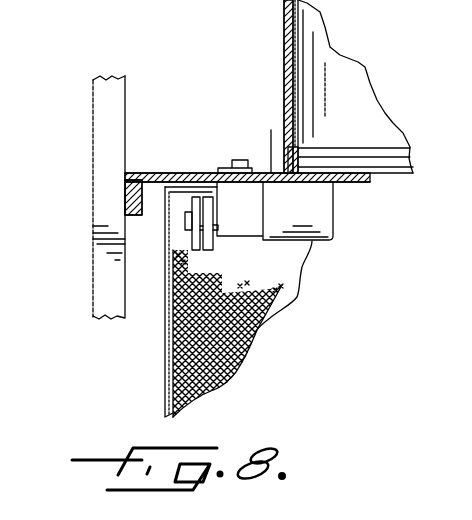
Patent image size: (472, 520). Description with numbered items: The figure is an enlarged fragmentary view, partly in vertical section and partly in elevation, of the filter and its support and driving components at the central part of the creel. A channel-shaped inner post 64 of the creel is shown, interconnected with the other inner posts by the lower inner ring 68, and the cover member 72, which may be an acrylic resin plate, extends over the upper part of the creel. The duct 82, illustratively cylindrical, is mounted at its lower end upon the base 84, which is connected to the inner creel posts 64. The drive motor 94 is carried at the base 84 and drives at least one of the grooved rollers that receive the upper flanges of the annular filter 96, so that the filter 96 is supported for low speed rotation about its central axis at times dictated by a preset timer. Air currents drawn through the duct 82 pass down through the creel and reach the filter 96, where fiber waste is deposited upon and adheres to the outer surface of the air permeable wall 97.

The inner post 64 is at (93, 240).
The lower inner ring 68 is at (125, 200).
The cover member 72 is at (193, 203).
The duct 82 is at (338, 58).
The base 84 is at (271, 130).
The drive motor 94 is at (322, 214).
The annular filter 96 is at (257, 330).
The air permeable wall 97 is at (165, 378).